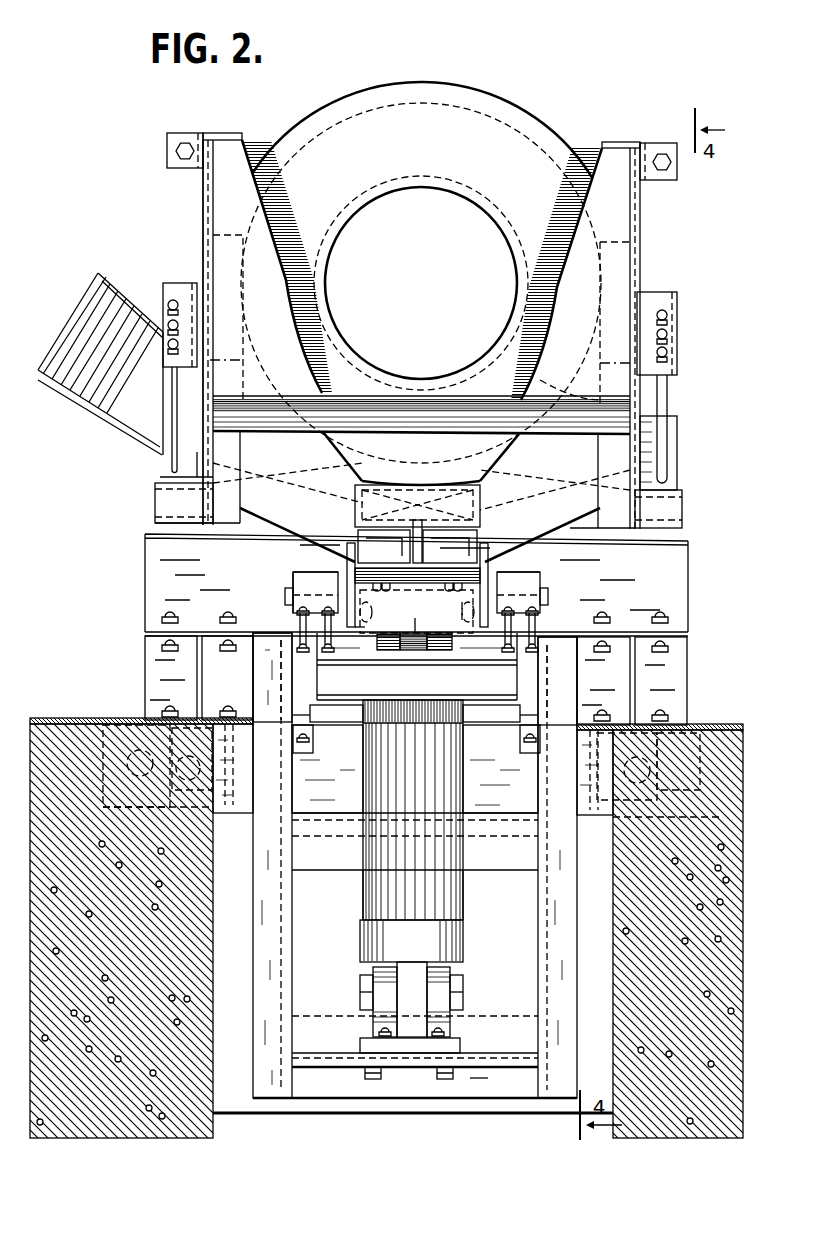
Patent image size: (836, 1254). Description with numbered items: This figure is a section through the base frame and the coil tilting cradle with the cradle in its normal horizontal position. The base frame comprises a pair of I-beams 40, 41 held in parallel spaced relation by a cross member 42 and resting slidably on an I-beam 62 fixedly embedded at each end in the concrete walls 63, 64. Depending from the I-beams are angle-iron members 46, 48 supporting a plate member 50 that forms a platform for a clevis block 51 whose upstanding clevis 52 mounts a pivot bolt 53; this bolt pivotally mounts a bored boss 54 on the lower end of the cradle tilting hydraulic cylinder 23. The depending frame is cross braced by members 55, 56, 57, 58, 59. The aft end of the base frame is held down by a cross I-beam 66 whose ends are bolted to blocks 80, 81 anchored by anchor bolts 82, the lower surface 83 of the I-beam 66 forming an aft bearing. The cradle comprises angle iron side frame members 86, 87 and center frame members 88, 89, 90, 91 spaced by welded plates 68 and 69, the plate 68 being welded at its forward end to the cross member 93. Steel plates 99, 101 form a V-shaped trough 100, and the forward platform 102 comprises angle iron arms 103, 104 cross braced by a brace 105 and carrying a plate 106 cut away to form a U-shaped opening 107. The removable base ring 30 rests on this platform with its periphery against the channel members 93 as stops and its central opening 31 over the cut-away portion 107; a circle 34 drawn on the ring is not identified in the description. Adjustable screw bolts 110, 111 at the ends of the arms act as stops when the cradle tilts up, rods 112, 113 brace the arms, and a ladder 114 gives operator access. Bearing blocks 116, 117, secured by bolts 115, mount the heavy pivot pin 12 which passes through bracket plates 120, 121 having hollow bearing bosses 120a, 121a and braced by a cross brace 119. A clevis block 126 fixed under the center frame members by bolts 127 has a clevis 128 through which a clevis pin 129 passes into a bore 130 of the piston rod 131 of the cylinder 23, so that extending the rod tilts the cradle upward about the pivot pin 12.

The removable base ring 30 is at (314, 119).
The central opening 31 is at (418, 188).
The ring track 34 is at (526, 122).
The platform plate 106 is at (215, 203).
The apertured platform 102 is at (201, 241).
The adjustable screw bolt 111 is at (168, 153).
The adjustable screw bolt 110 is at (661, 152).
The U-shaped opening 107 is at (549, 346).
The V-shaped trough 100 is at (567, 383).
The brace 105 is at (418, 404).
The angle iron arm 104 is at (185, 505).
The angle iron arm 103 is at (660, 514).
The cross member 93 is at (665, 500).
The steel plate 101 is at (355, 471).
The steel plate 99 is at (496, 467).
The plate 68 is at (356, 521).
The bolts 127 is at (390, 530).
The clevis block 126 is at (443, 577).
The center frame member 91 is at (384, 546).
The center frame member 90 is at (450, 546).
The center frame member 89 is at (357, 558).
The center frame member 88 is at (480, 552).
The plate 69 is at (370, 600).
The hollow bearing boss 121a is at (358, 596).
The hollow bearing boss 120a is at (473, 596).
The bracket plate 121 is at (313, 573).
The bracket plate 120 is at (536, 576).
The bearing block 117 is at (293, 585).
The bearing block 116 is at (548, 585).
The pivot pin 12 is at (284, 598).
The bolts 115 is at (297, 612).
The cross brace 119 is at (363, 628).
The clevis pin 129 is at (468, 620).
The piston rod 131 is at (403, 658).
The bore 130 is at (417, 652).
The clevis 128 is at (448, 647).
The I-beam 66 is at (148, 580).
The block 81 is at (150, 670).
The anchor bolts 82 is at (130, 724).
The cross brace member 59 is at (535, 687).
The block 80 is at (680, 675).
The cross brace member 58 is at (295, 683).
The lower surface 83 is at (567, 641).
The I-beam 41 is at (313, 705).
The I-beam 40 is at (517, 707).
The concrete wall 64 is at (72, 720).
The concrete wall 63 is at (693, 740).
The angle-iron member 48 is at (278, 943).
The angle-iron member 46 is at (545, 940).
The cross brace member 55 is at (340, 868).
The I-beam 62 is at (322, 797).
The cross brace member 56 is at (313, 728).
The cross brace member 57 is at (520, 730).
The cross member 42 is at (403, 705).
The cradle tilting hydraulic cylinder 23 is at (457, 900).
The bored boss 54 is at (410, 970).
The clevis 52 is at (452, 968).
The pivot bolt 53 is at (467, 995).
The clevis block 51 is at (413, 1054).
The plate member 50 is at (330, 1050).
The ladder 114 is at (73, 333).
The rod 113 is at (170, 468).
The angle iron side frame member 87 is at (160, 455).
The rod 112 is at (667, 393).
The angle iron side frame member 86 is at (655, 470).